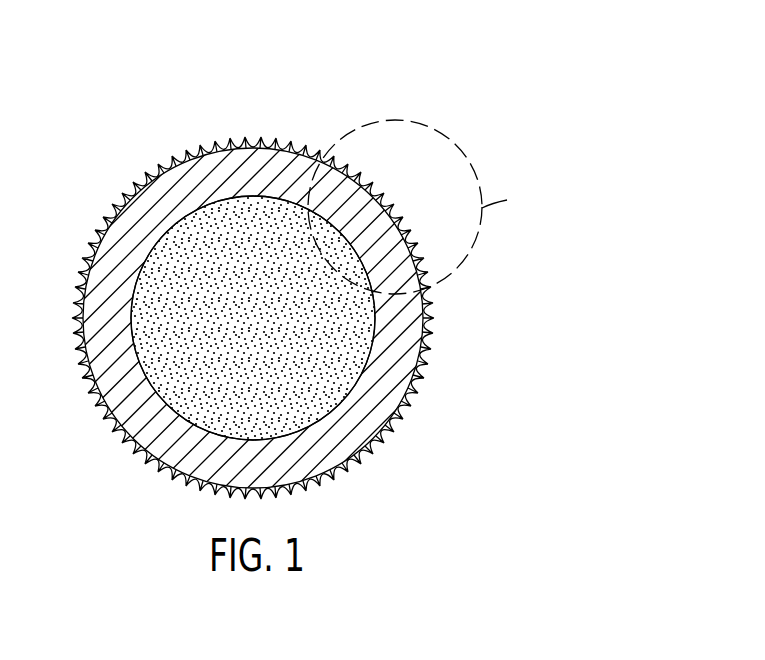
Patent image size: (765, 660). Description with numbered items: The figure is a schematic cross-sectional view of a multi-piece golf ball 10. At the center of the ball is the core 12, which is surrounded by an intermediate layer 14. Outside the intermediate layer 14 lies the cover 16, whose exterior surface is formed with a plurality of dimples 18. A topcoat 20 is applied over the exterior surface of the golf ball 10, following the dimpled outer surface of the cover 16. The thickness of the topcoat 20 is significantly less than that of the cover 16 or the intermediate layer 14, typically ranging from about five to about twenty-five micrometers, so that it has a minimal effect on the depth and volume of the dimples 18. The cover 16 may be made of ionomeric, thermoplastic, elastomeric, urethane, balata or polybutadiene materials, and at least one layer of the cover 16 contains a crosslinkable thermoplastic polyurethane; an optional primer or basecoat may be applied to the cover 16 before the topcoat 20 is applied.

The golf ball 10 is at (479, 113).
The core 12 is at (266, 332).
The intermediate layer 14 is at (220, 200).
The cover 16 is at (272, 146).
The dimples 18 is at (102, 221).
The topcoat 20 is at (314, 158).